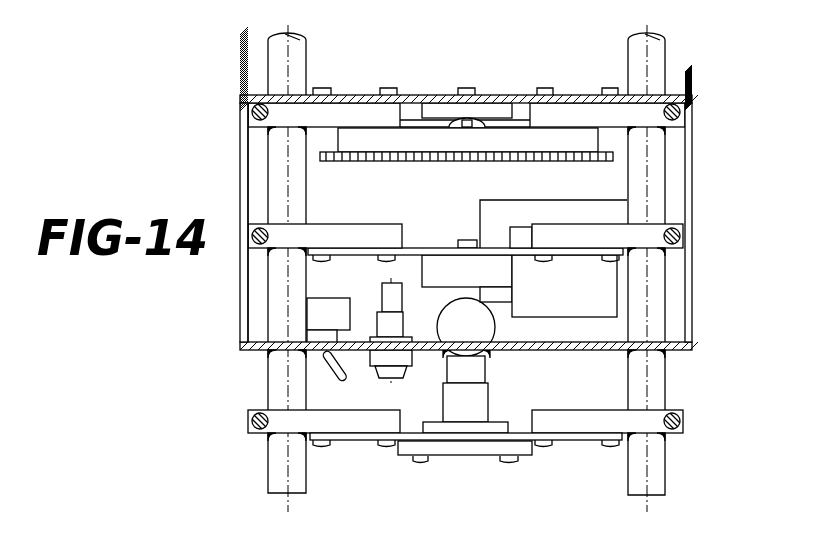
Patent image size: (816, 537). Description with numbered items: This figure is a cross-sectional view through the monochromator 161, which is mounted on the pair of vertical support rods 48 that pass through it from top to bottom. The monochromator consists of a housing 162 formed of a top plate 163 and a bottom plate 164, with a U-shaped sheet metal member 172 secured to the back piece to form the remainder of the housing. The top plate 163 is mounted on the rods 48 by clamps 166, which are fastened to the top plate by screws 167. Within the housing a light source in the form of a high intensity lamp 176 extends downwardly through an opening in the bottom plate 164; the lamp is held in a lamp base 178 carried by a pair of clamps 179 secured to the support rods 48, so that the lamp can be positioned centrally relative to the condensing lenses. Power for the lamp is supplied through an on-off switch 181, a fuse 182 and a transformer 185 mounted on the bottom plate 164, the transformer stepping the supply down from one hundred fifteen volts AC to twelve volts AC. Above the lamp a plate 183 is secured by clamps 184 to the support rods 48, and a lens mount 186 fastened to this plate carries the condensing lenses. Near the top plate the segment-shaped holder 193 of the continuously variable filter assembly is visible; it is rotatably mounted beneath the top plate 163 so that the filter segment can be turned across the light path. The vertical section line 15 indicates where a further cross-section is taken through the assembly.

The section line 15- 15 is at (402, 487).
The support rods 48 is at (274, 462).
The monochromator 161 is at (697, 143).
The housing 162 is at (243, 152).
The top plate 163 is at (653, 100).
The bottom plate 164 is at (558, 351).
The clamps 166 is at (333, 110).
The screws 167 is at (403, 74).
The U-shaped sheet metal member 172 is at (243, 185).
The high intensity lamp 176 is at (445, 324).
The lamp base 178 is at (403, 459).
The clamps 179 is at (259, 407).
The on-off switch 181 is at (316, 306).
The fuse 182 is at (382, 302).
The plate 183 is at (410, 247).
The clamps 184 is at (357, 208).
The transformer 185 is at (578, 292).
The lens mount 186 is at (435, 268).
The holder 193 is at (515, 145).